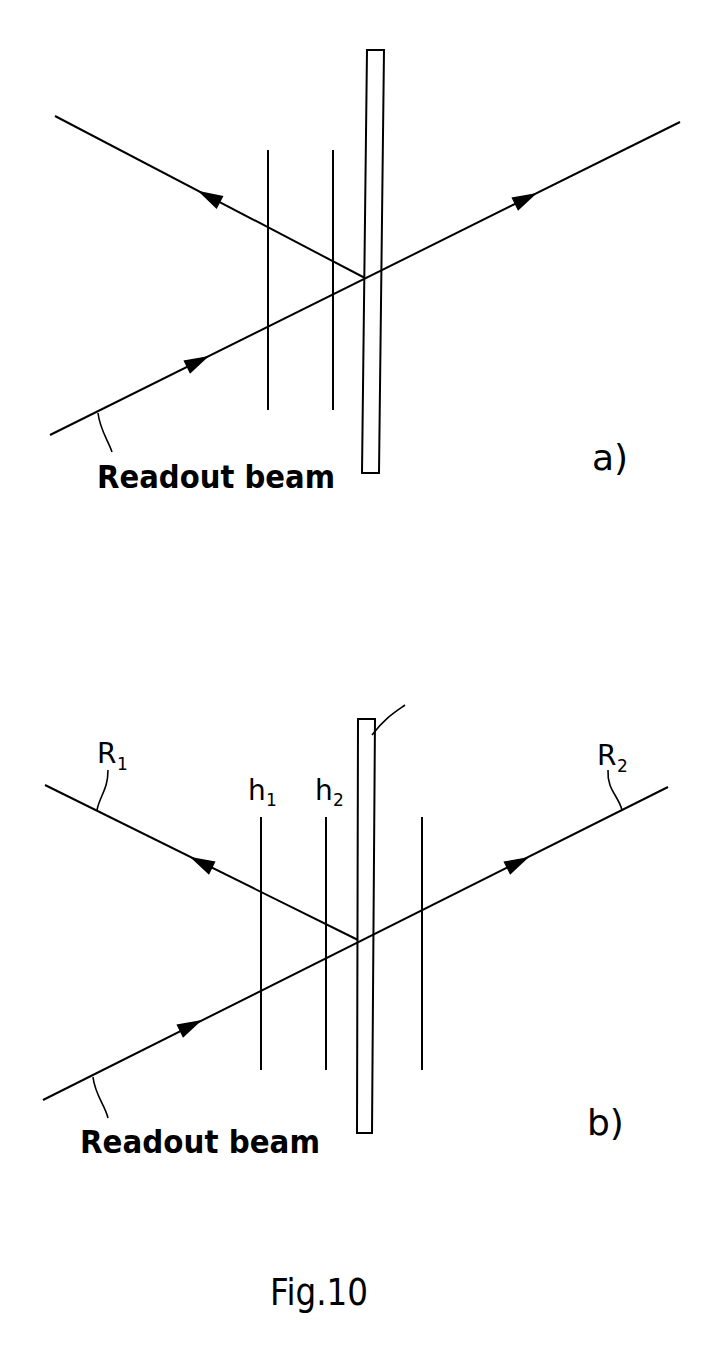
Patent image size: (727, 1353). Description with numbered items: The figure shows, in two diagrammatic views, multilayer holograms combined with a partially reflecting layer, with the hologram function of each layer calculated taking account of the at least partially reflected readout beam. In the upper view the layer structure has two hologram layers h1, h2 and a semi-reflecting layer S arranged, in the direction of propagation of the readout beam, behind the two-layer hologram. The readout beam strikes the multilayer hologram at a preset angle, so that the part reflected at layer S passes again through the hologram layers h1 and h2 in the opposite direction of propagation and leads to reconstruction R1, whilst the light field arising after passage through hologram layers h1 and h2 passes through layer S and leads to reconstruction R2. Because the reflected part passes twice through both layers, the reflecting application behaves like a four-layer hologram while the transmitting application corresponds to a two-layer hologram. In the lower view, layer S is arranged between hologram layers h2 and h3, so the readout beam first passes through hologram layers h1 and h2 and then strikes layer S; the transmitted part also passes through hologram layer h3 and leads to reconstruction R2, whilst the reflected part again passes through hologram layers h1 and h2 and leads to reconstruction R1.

The semi-reflecting layer S is at (380, 70).
The hologram layer h1 is at (272, 258).
The hologram layer h2 is at (337, 258).
The hologram layer h3 is at (426, 922).
The reconstruction R1 is at (102, 140).
The reconstruction R2 is at (632, 145).